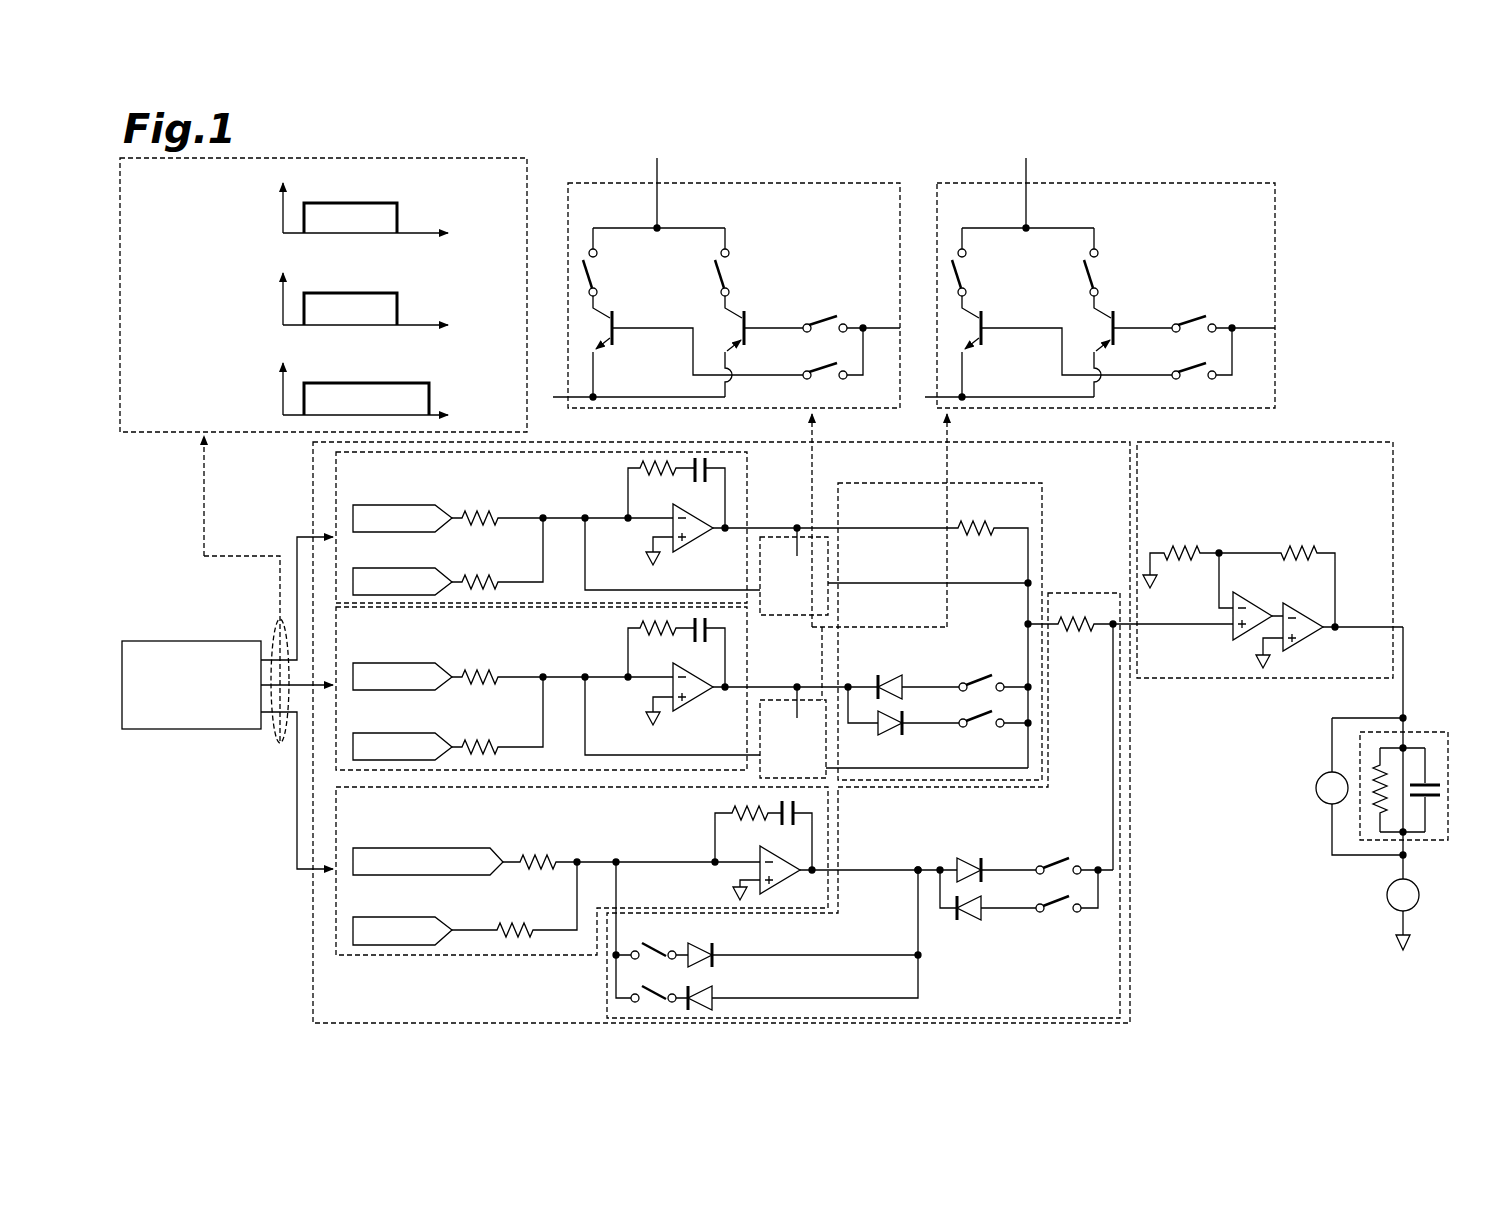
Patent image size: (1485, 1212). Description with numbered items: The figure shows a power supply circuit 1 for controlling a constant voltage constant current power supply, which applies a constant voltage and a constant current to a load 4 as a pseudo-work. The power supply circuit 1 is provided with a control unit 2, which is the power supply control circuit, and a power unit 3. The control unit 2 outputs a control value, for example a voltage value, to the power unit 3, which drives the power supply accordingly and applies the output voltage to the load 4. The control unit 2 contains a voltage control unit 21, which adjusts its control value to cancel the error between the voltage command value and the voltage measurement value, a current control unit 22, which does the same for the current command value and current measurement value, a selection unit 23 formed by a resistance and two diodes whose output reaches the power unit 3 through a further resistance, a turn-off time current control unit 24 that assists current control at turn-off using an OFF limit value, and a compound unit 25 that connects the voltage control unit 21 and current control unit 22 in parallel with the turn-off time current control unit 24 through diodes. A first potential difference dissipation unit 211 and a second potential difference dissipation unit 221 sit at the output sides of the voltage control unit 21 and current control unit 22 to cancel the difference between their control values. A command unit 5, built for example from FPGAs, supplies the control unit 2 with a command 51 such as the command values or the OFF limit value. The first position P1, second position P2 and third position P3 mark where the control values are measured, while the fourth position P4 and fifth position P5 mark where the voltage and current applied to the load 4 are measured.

The power supply circuit 1 is at (1392, 275).
The control unit 2 is at (1078, 440).
The power unit 3 is at (1347, 441).
The load 4 is at (1428, 732).
The command unit 5 is at (143, 641).
The voltage control unit 21 is at (548, 527).
The current control unit 22 is at (548, 688).
The selection unit 23 is at (1043, 512).
The turn-off time current control unit 24 is at (638, 871).
The compound unit 25 is at (1062, 593).
The command 51 is at (146, 450).
The first potential difference dissipation unit 211 is at (845, 177).
The second potential difference dissipation unit 221 is at (1212, 177).
The first position P1 is at (824, 518).
The second position P2 is at (810, 681).
The third position P3 is at (924, 864).
The fourth position P4 is at (1311, 787).
The fifth position P5 is at (1382, 897).